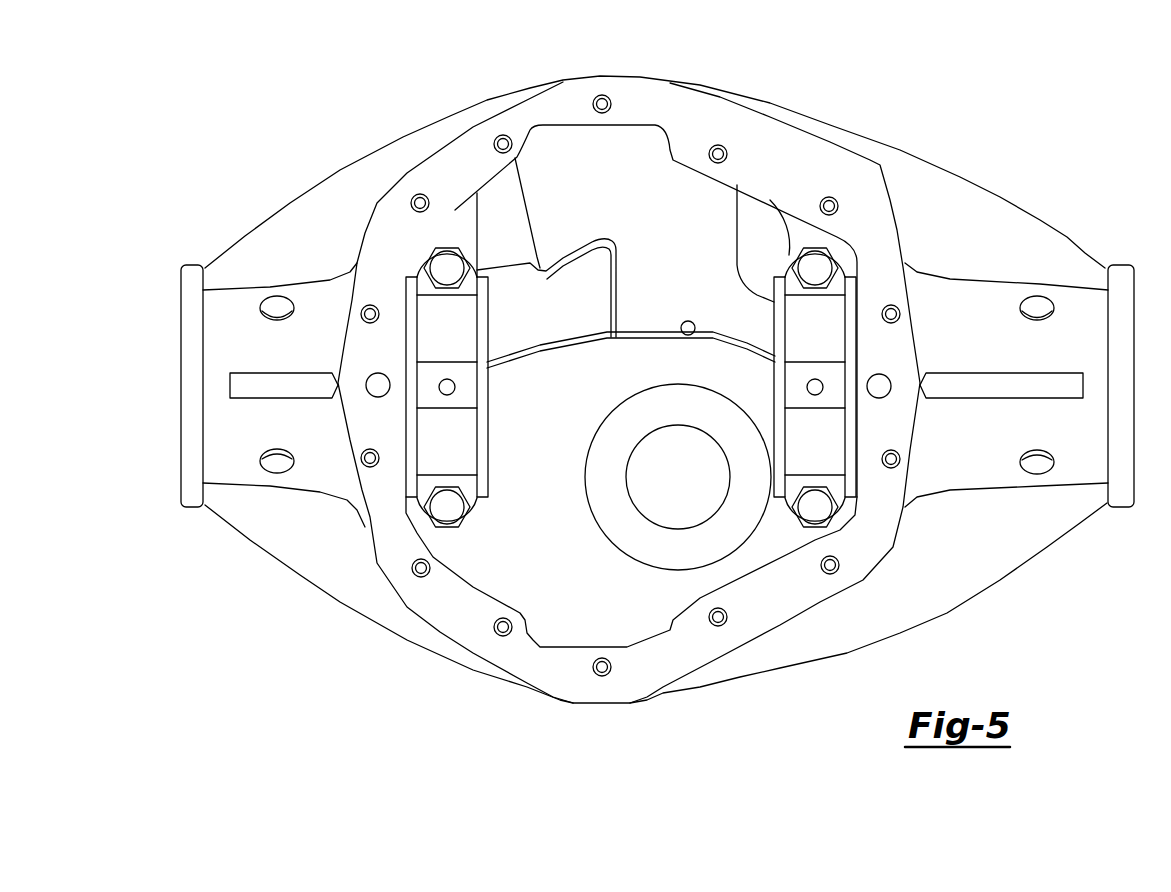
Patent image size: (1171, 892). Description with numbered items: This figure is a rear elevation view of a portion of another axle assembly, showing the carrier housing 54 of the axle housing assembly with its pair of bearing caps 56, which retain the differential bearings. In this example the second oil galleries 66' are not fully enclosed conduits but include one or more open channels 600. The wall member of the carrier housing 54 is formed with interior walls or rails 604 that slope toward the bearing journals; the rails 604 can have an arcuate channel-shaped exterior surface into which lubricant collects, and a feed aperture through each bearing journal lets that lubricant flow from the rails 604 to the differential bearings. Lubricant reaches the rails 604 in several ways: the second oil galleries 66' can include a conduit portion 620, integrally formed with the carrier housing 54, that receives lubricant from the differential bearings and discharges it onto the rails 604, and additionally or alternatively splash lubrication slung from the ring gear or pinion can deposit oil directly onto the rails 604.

The carrier housing 54 is at (767, 168).
The bearing caps 56 is at (837, 253).
The rails 604 is at (520, 350).
The open channels 600 is at (737, 335).
The conduit portion 620 is at (688, 337).
The second oil galleries 66' is at (572, 247).